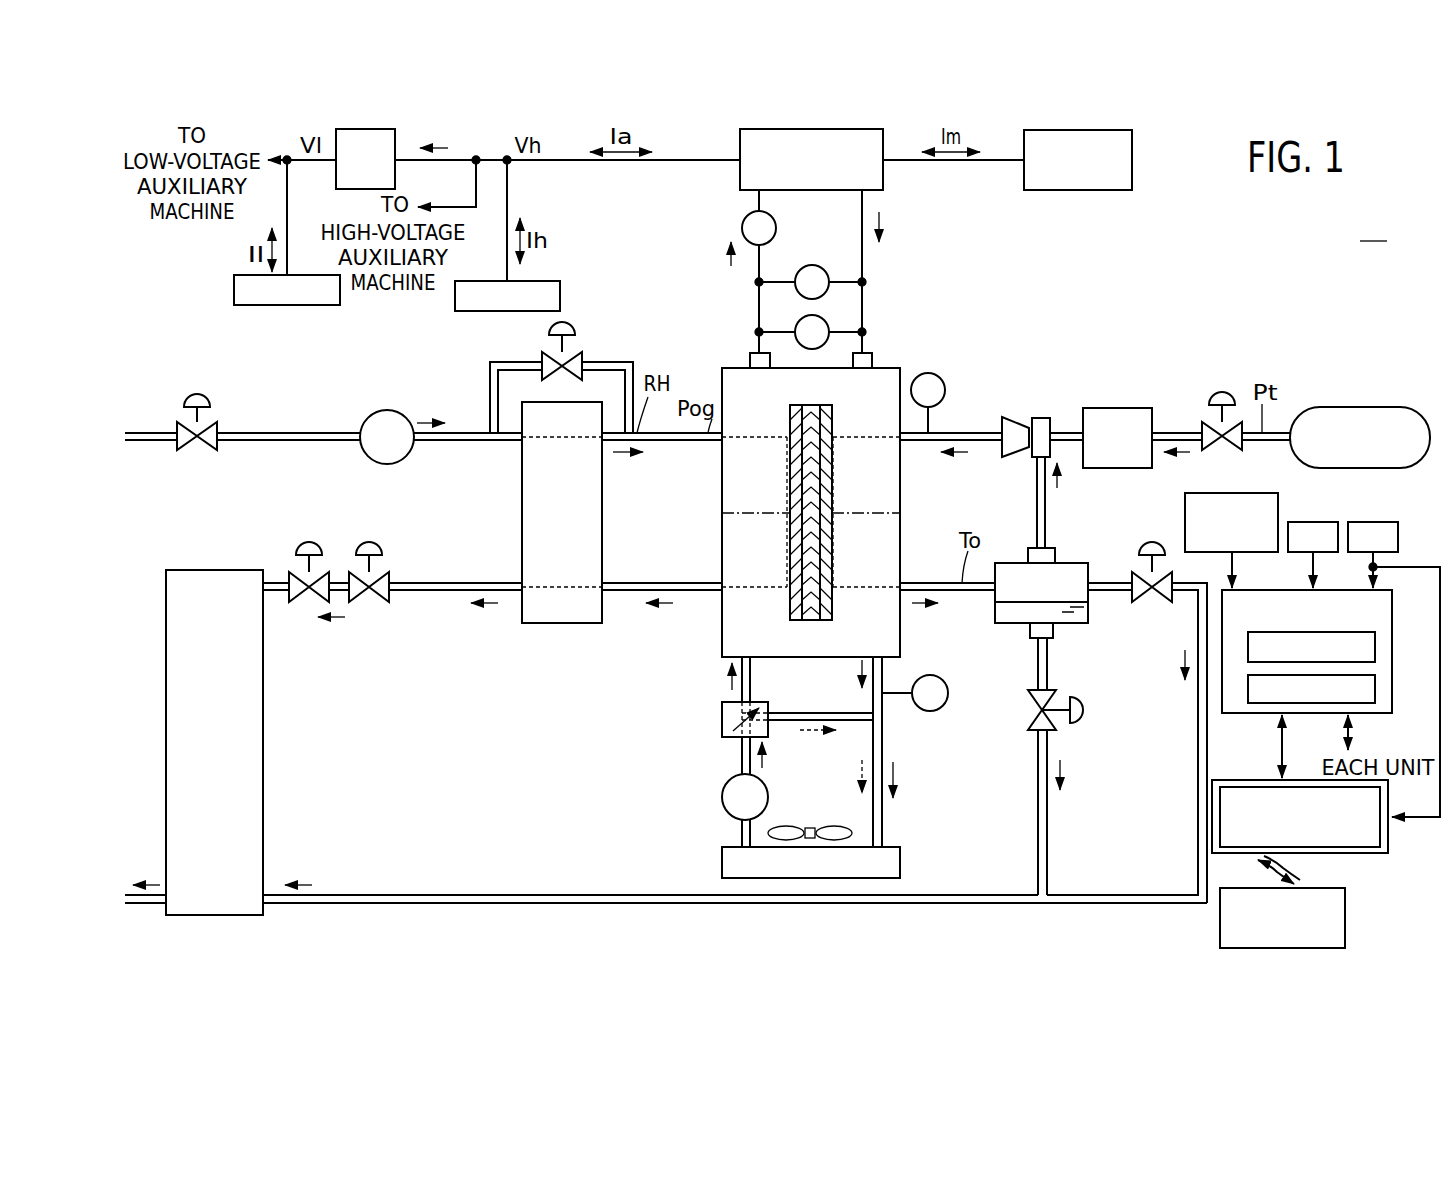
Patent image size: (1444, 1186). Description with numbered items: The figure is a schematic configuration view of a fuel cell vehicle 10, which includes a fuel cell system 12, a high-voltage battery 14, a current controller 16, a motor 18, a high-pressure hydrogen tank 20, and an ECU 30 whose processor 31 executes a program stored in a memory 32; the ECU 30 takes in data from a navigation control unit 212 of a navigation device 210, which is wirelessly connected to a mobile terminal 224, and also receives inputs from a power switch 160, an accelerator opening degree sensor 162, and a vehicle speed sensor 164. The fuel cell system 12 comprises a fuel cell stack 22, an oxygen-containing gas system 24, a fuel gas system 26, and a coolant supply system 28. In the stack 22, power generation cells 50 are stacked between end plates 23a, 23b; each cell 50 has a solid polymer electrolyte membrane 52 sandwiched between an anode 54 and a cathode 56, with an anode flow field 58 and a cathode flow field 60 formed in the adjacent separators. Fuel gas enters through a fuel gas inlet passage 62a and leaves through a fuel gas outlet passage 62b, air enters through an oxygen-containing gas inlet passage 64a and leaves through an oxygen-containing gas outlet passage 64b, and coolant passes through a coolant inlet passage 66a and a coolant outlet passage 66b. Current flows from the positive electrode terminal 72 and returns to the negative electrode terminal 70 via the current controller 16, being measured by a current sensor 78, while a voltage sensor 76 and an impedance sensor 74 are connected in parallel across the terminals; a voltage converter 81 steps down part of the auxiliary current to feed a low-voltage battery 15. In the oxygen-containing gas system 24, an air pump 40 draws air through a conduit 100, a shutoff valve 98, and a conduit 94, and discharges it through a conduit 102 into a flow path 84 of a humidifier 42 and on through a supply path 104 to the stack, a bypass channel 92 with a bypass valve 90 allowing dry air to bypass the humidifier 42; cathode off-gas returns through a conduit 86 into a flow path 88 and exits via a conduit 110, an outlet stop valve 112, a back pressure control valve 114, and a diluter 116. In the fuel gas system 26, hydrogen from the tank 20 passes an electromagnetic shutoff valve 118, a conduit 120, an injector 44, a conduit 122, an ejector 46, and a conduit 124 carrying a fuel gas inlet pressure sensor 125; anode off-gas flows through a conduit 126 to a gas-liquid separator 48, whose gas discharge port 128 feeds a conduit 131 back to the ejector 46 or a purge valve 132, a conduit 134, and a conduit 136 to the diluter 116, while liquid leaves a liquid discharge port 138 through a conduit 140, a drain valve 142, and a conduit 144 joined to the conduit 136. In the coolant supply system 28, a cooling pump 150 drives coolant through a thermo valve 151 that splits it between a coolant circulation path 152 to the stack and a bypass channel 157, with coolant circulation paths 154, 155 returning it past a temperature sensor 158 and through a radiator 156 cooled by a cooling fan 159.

The fuel cell vehicle 10 is at (1373, 228).
The fuel cell system 12 is at (1198, 276).
The high-voltage battery 14 is at (560, 297).
The low-voltage battery 15 is at (234, 290).
The current controller 16 is at (883, 180).
The motor 18 is at (1132, 160).
The high-pressure hydrogen tank 20 is at (1345, 407).
The fuel cell stack 22 is at (722, 503).
The end plate 23a is at (722, 569).
The end plate 23b is at (901, 540).
The oxygen-containing gas system 24 is at (338, 361).
The fuel gas system 26 is at (1300, 344).
The coolant supply system 28 is at (663, 818).
The ECU 30 is at (1392, 612).
The processor (CPU) 31 is at (1375, 648).
The memory 32 is at (1375, 690).
The air pump 40 is at (385, 410).
The humidifier 42 is at (522, 518).
The injector 44 is at (1115, 408).
The ejector 46 is at (1010, 417).
The gas-liquid separator 48 is at (1013, 630).
The power generation cell 50 is at (779, 419).
The solid polymer electrolyte membrane 52 is at (811, 500).
The anode 54 is at (832, 423).
The cathode 56 is at (795, 520).
The anode flow field 58 is at (836, 459).
The cathode flow field 60 is at (787, 459).
The fuel gas inlet passage 62a is at (905, 447).
The fuel gas outlet passage 62b is at (898, 587).
The oxygen-containing gas inlet passage 64a is at (720, 450).
The oxygen-containing gas outlet passage 64b is at (720, 592).
The coolant inlet passage 66a is at (751, 660).
The coolant outlet passage 66b is at (883, 660).
The negative electrode terminal 70 is at (872, 362).
The positive electrode terminal 72 is at (750, 362).
The impedance sensor 74 is at (826, 322).
The voltage sensor 76 is at (822, 268).
The current sensor 78 is at (742, 228).
The voltage converter 81 is at (395, 178).
The flow path 84 is at (533, 440).
The conduit 86 is at (628, 595).
The flow path 88 is at (537, 582).
The bypass valve 90 is at (545, 331).
The bypass channel 92 is at (503, 360).
The conduit 94 is at (263, 432).
The shutoff valve 98 is at (195, 390).
The conduit 100 is at (150, 443).
The conduit 102 is at (432, 443).
The supply path 104 is at (667, 447).
The conduit 110 is at (445, 595).
The outlet stop valve 112 is at (367, 542).
The back pressure control valve 114 is at (307, 542).
The diluter 116 is at (263, 724).
The electromagnetic shutoff valve 118 is at (1218, 392).
The conduit 120 is at (1183, 432).
The conduit 122 is at (1064, 432).
The conduit 124 is at (985, 432).
The fuel gas inlet pressure sensor 125 is at (929, 373).
The conduit 126 is at (972, 592).
The gas discharge port 128 is at (1055, 554).
The conduit 131 is at (1047, 509).
The purge valve 132 is at (1152, 542).
The conduit 134 is at (1198, 766).
The conduit 136 is at (425, 894).
The liquid discharge port 138 is at (1053, 631).
The conduit 140 is at (1048, 681).
The drain valve 142 is at (1085, 710).
The conduit 144 is at (1048, 816).
The cooling pump 150 is at (722, 797).
The thermo valve 151 is at (722, 720).
The coolant circulation path 152 is at (740, 690).
The coolant circulation path 154 is at (873, 703).
The coolant circulation path 155 is at (882, 750).
The radiator 156 is at (900, 862).
The bypass channel 157 is at (780, 722).
The temperature sensor 158 is at (945, 705).
The cooling fan 159 is at (810, 827).
The power switch 160 is at (1205, 493).
The accelerator opening degree sensor 162 is at (1308, 522).
The vehicle speed sensor 164 is at (1370, 522).
The navigation device 210 is at (1256, 774).
The navigation control unit 212 is at (1362, 846).
The mobile terminal 224 is at (1345, 916).